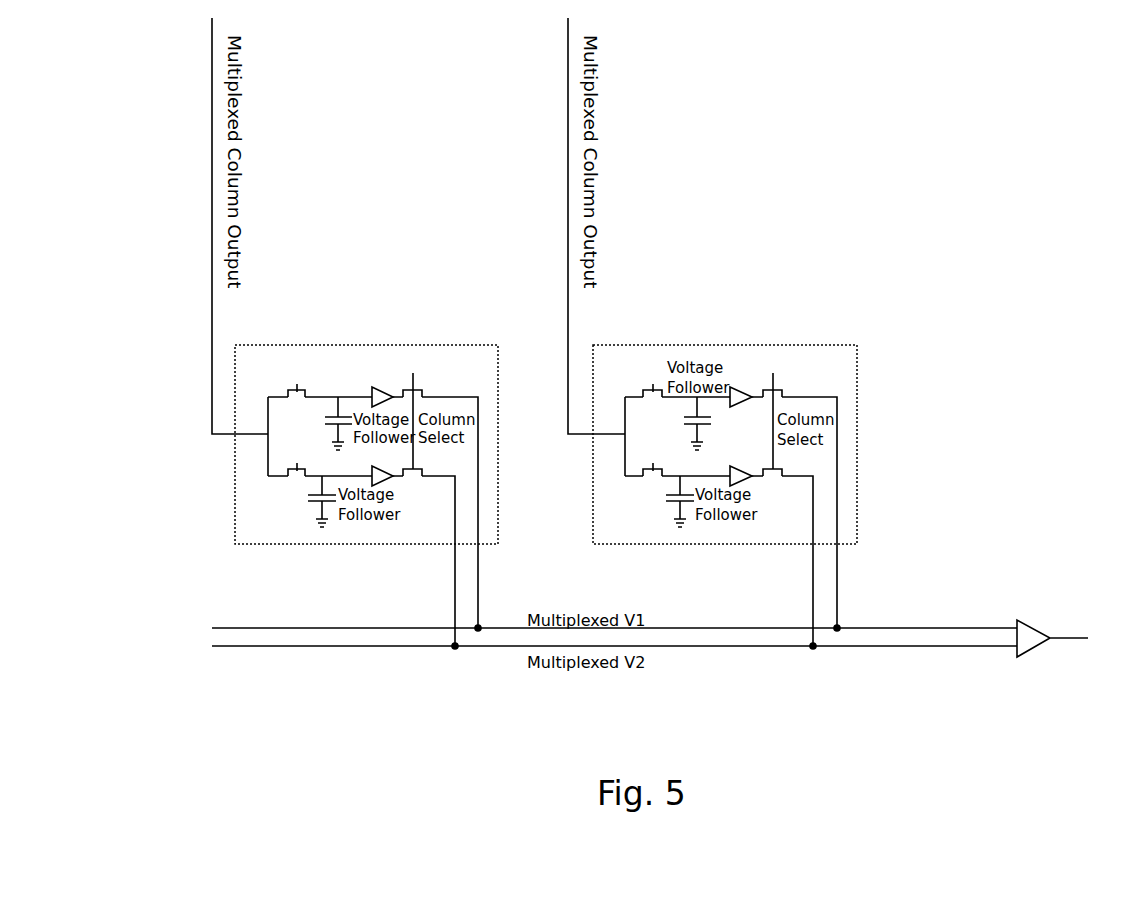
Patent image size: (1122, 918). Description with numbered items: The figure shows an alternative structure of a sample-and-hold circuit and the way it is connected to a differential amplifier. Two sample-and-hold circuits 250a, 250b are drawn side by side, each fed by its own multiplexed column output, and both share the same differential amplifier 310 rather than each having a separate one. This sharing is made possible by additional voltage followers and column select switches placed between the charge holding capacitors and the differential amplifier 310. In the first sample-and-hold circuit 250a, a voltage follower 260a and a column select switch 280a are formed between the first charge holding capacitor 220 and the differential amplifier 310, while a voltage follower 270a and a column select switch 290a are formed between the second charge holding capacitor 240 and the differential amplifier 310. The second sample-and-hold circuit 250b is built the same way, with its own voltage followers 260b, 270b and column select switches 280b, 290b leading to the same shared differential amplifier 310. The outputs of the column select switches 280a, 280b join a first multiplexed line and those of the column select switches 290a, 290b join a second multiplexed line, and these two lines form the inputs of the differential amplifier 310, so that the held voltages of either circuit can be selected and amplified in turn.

The first charge holding capacitor 220 is at (330, 410).
The second charge holding capacitor 240 is at (310, 504).
The sample-and-hold circuit 250a is at (250, 537).
The sample-and-hold circuit 250b is at (617, 530).
The voltage follower 260a is at (390, 395).
The voltage follower 260b is at (750, 395).
The voltage follower 270a is at (390, 480).
The voltage follower 270b is at (747, 477).
The column select switch 280a is at (415, 382).
The column select switch 280b is at (775, 382).
The column select switch 290a is at (425, 467).
The column select switch 290b is at (785, 467).
The differential amplifier 310 is at (1020, 618).